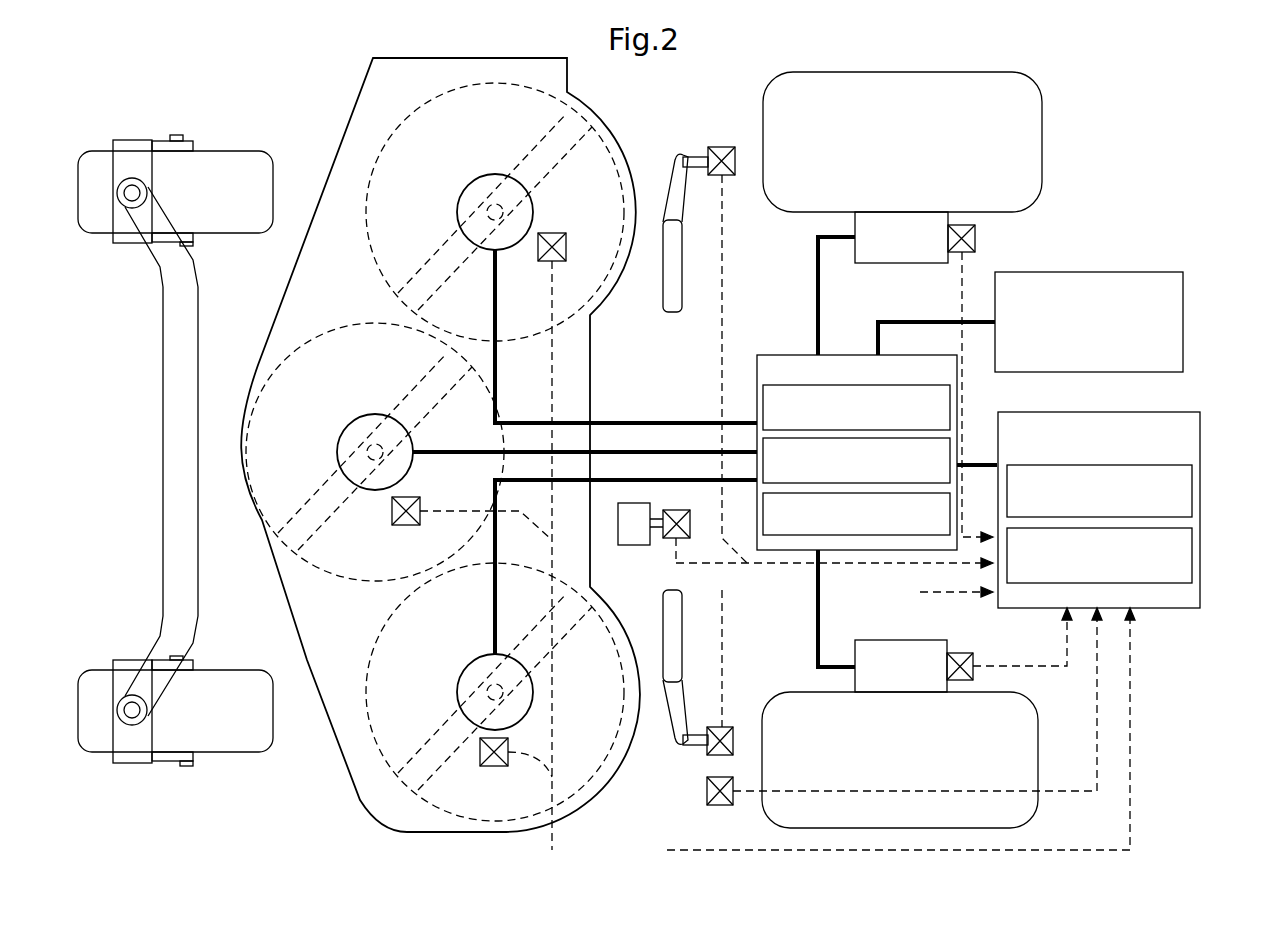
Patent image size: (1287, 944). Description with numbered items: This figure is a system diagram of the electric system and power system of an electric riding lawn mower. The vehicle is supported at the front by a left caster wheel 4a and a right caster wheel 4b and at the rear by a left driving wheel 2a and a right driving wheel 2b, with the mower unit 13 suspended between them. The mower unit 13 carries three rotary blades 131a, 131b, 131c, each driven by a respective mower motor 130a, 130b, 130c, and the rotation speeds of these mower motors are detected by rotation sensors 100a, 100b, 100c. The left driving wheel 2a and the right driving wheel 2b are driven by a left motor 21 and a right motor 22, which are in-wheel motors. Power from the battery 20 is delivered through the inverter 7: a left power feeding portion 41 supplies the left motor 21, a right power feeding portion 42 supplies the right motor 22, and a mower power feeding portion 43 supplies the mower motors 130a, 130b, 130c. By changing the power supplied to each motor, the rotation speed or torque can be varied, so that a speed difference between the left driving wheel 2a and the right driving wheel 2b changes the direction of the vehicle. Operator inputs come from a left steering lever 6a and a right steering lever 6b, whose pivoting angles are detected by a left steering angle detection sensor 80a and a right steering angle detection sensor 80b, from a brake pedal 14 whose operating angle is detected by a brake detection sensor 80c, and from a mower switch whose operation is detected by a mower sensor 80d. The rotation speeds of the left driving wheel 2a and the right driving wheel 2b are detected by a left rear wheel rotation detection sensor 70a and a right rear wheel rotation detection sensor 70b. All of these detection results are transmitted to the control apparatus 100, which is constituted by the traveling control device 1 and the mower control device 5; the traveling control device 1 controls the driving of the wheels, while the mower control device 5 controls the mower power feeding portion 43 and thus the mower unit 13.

The mower unit 13 is at (342, 137).
The mower motor 130a is at (468, 666).
The mower motor 130b is at (378, 414).
The mower motor 130c is at (492, 175).
The rotary blade 131a is at (437, 767).
The rotary blade 131b is at (280, 540).
The rotary blade 131c is at (432, 257).
The rotation sensor 100a is at (493, 767).
The rotation sensor 100b is at (392, 520).
The rotation sensor 100c is at (568, 248).
The left caster wheel 4a is at (213, 738).
The right caster wheel 4b is at (210, 160).
The left steering lever 6a is at (682, 630).
The right steering lever 6b is at (682, 278).
The left steering angle detection sensor 80a is at (733, 741).
The right steering angle detection sensor 80b is at (722, 147).
The brake detection sensor 80c is at (690, 530).
The mower sensor 80d is at (707, 791).
The brake pedal 14 is at (633, 545).
The left driving wheel 2a is at (900, 828).
The right driving wheel 2b is at (900, 72).
The left motor 21 is at (895, 640).
The right motor 22 is at (893, 250).
The left rear wheel rotation detection sensor 70a is at (962, 653).
The right rear wheel rotation detection sensor 70b is at (975, 238).
The battery 20 is at (1120, 272).
The inverter 7 is at (913, 355).
The left power feeding portion 41 is at (793, 386).
The right power feeding portion 42 is at (763, 445).
The mower power feeding portion 43 is at (950, 513).
The control apparatus 100 is at (1180, 412).
The traveling control device 1 is at (1192, 484).
The mower control device 5 is at (1192, 550).